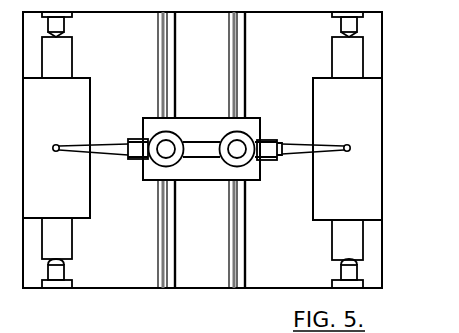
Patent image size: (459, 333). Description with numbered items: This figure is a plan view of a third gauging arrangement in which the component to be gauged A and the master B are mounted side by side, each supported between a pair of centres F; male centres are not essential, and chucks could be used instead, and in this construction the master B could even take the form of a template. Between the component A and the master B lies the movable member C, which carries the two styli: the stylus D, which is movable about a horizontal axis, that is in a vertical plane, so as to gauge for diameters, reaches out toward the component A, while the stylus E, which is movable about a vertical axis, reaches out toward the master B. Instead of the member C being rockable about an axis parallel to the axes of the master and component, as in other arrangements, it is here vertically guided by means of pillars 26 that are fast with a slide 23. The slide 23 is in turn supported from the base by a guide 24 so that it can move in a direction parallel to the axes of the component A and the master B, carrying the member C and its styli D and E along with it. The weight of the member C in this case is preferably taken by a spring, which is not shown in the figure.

The component A is at (78, 205).
The master B is at (370, 188).
The movable member C is at (213, 145).
The stylus D is at (100, 147).
The stylus E is at (283, 148).
The centres F is at (60, 27).
The slide 23 is at (203, 167).
The guide 24 is at (238, 260).
The pillars 26 is at (237, 147).